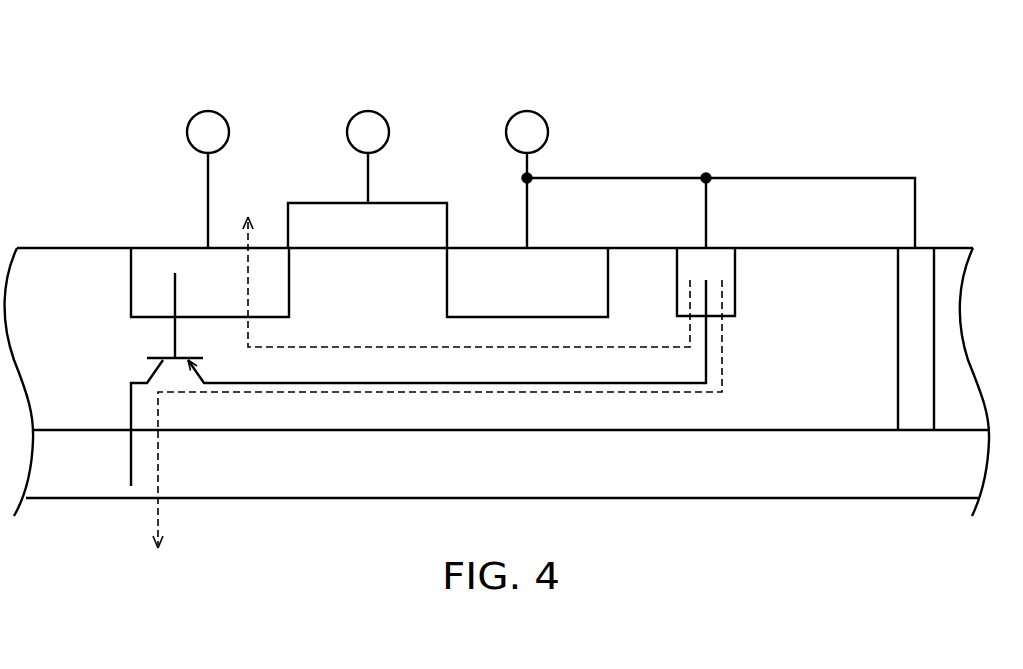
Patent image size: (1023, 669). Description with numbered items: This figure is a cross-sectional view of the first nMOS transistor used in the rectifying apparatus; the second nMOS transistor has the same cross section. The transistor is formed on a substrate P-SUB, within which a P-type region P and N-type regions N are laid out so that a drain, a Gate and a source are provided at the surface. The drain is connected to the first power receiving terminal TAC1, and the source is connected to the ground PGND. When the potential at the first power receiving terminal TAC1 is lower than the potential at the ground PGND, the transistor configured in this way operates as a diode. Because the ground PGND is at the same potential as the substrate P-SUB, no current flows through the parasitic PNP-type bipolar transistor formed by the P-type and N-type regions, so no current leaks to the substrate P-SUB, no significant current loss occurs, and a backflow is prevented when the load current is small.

The substrate P-SUB is at (497, 382).
The P-well P is at (511, 382).
The N-type drain/source regions N is at (369, 282).
The first power receiving terminal TAC1 is at (208, 126).
The gate electrode Gate is at (367, 152).
The ground PGND is at (680, 126).